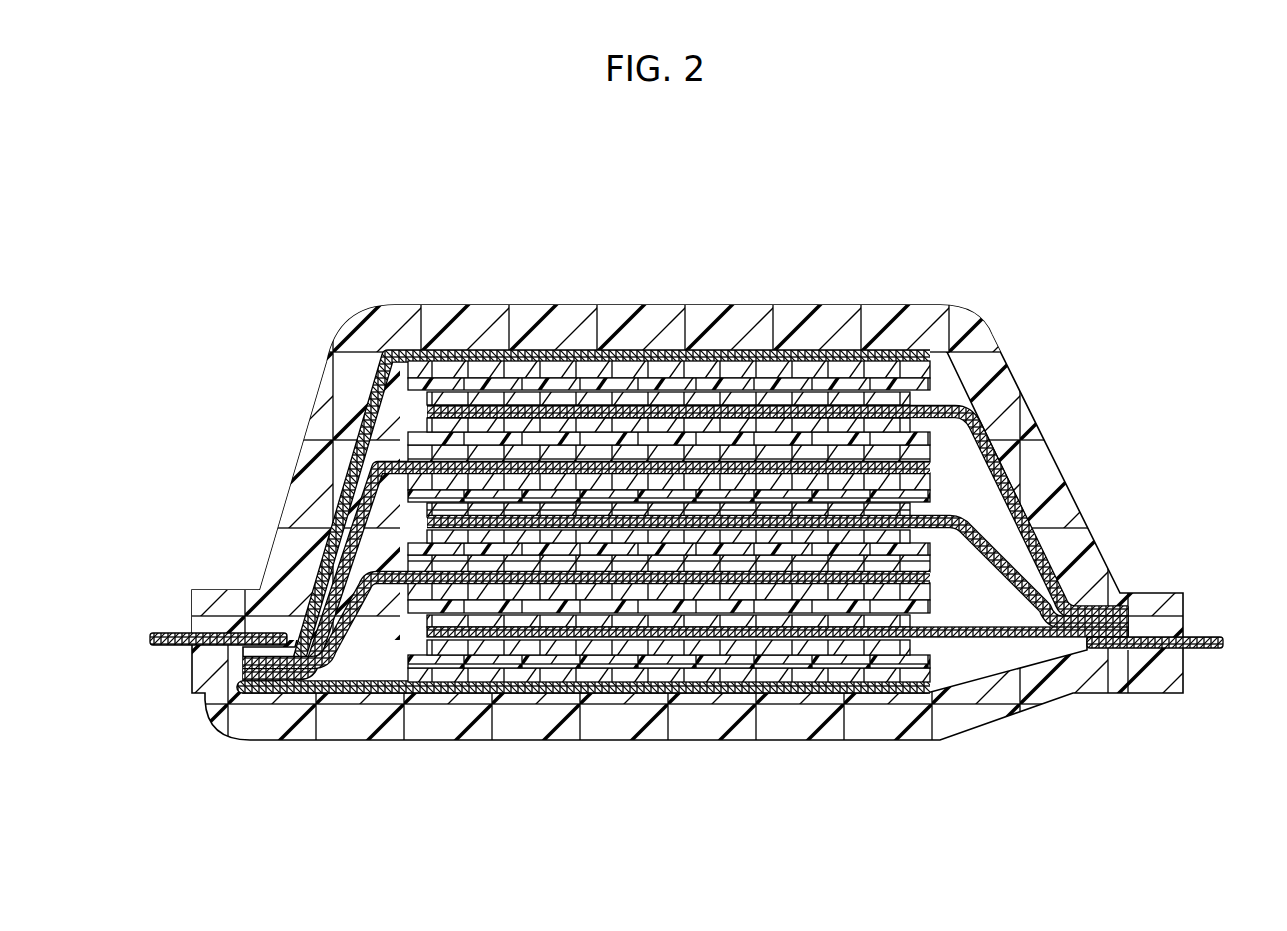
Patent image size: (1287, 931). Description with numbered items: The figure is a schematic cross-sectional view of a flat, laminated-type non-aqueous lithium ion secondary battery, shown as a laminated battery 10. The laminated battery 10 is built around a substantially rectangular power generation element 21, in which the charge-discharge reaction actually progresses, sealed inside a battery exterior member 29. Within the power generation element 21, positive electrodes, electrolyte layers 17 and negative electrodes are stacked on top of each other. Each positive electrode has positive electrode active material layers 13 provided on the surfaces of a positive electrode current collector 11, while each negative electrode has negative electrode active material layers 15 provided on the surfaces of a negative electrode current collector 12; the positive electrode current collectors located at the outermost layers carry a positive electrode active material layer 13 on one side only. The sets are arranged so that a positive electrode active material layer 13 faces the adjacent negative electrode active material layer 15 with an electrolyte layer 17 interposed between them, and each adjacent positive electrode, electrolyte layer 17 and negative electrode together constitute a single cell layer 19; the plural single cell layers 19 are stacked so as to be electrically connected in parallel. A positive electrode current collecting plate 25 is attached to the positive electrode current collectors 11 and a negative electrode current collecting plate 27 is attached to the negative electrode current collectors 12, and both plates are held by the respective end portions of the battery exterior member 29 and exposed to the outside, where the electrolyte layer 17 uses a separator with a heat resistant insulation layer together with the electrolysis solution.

The laminated battery 10 is at (283, 283).
The positive electrode current collector 11 is at (345, 480).
The negative electrode current collector 12 is at (817, 212).
The positive electrode active material layer 13 is at (738, 384).
The negative electrode active material layer 15 is at (651, 398).
The electrolyte layer 17 is at (690, 369).
The single cell layer 19 is at (684, 487).
The power generation element 21 is at (940, 563).
The positive electrode current collecting plate 25 is at (168, 633).
The negative electrode current collecting plate 27 is at (1198, 637).
The battery exterior member 29 is at (1148, 593).